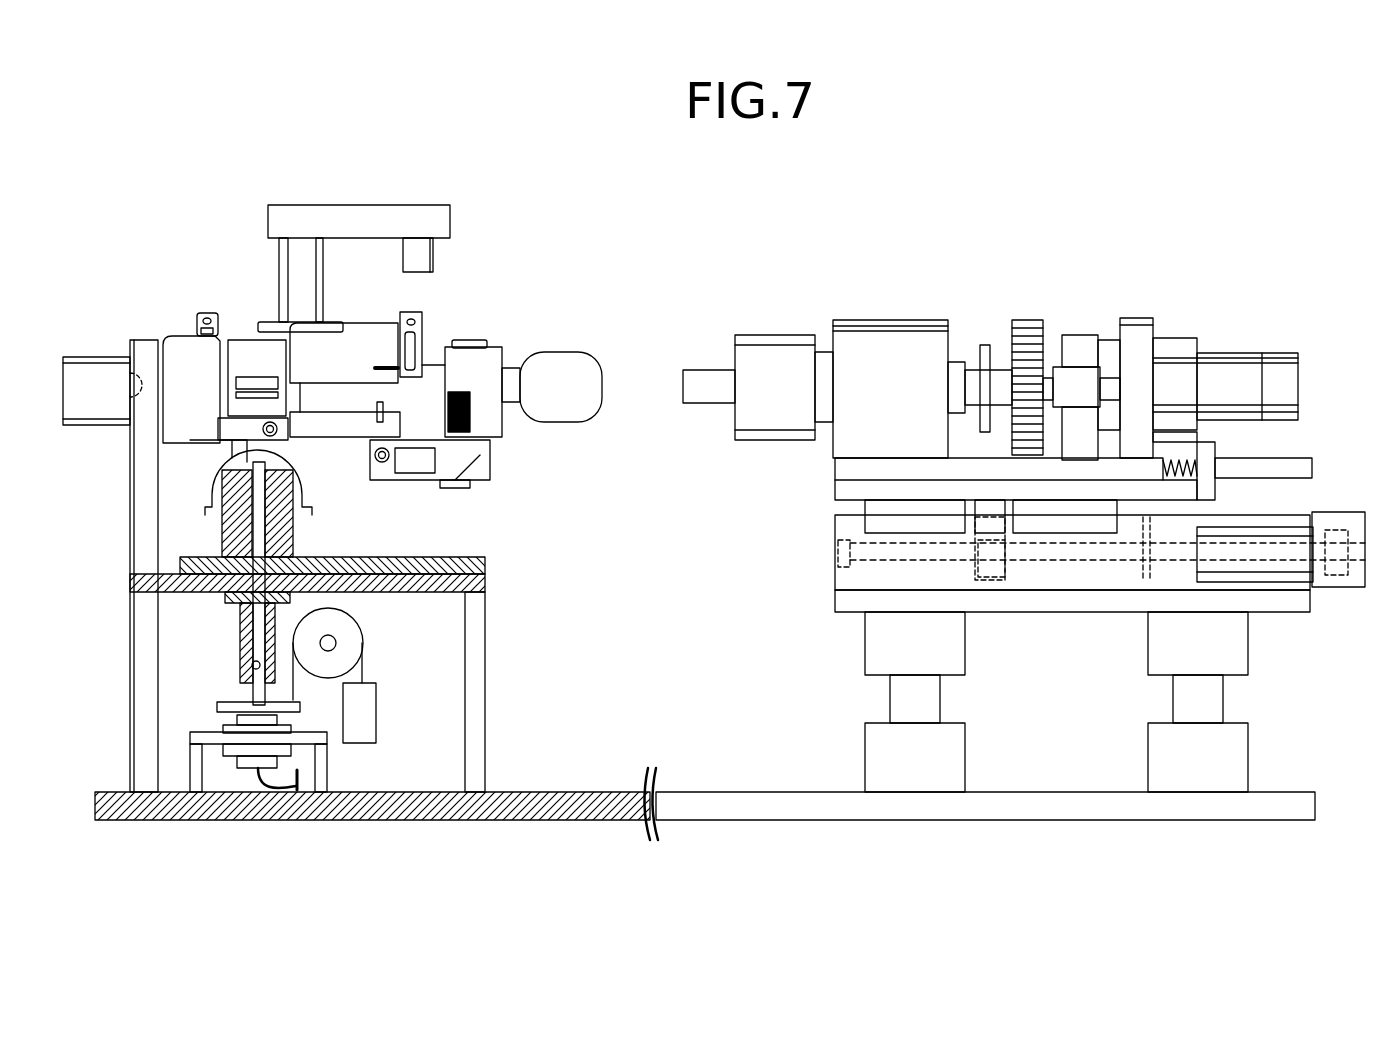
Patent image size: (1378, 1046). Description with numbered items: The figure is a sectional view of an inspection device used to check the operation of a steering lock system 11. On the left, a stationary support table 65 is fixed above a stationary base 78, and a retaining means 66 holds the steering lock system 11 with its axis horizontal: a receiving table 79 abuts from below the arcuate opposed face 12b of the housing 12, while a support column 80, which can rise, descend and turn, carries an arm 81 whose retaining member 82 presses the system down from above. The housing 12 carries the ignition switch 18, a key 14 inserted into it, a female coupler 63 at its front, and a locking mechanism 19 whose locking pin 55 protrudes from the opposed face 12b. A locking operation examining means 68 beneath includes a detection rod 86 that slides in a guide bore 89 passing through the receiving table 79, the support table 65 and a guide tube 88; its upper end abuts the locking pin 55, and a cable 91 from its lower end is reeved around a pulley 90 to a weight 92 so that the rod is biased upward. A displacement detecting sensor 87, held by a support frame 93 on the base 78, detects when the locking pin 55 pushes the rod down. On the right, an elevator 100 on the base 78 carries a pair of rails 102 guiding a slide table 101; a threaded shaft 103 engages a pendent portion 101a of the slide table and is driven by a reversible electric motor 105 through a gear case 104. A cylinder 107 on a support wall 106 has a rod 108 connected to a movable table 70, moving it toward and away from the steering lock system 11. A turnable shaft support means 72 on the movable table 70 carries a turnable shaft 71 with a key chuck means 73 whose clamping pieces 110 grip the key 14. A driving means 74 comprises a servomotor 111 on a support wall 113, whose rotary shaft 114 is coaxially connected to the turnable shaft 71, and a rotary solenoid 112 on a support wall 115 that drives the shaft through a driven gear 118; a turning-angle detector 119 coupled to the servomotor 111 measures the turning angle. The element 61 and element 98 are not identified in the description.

The steering lock system 11 is at (427, 345).
The housing 12 is at (357, 380).
The arcuate opposed face 12b is at (220, 522).
The key 14 is at (558, 368).
The ignition switch 18 is at (177, 332).
The locking mechanism 19 is at (268, 487).
The locking pin 55 is at (232, 450).
The drive unit 61 is at (178, 425).
The female coupler 63 is at (477, 415).
The support table 65 is at (483, 582).
The retaining means 66 is at (301, 205).
The locking operation examining means 68 is at (193, 718).
The movable table 70 is at (867, 470).
The turnable shaft 71 is at (972, 378).
The turnable shaft support means 72 is at (893, 335).
The key chuck means 73 is at (728, 340).
The driving means 74 is at (1195, 337).
The stationary base 78 is at (618, 810).
The receiving table 79 is at (325, 565).
The support column 80 is at (297, 293).
The arm 81 is at (371, 217).
The retaining member 82 is at (433, 258).
The detection rod 86 is at (260, 537).
The displacement detecting sensor 87 is at (230, 748).
The guide tube 88 is at (240, 638).
The guide bore 89 is at (252, 665).
The pulley 90 is at (347, 657).
The cable 91 is at (360, 673).
The weight 92 is at (373, 728).
The support frame 93 is at (193, 755).
The block 98 is at (98, 350).
The elevator 100 is at (1058, 613).
The slide table 101 is at (843, 492).
The pendent portion 101a is at (992, 583).
The rails 102 is at (840, 578).
The threaded shaft 103 is at (1068, 562).
The gear case 104 is at (1335, 522).
The electric motor 105 is at (1277, 570).
The support wall 106 is at (1212, 445).
The cylinder 107 is at (1290, 463).
The rod 108 is at (1180, 457).
The clamping pieces 110 is at (712, 393).
The servomotor 111 is at (1175, 372).
The rotary solenoid 112 is at (1108, 350).
The support wall 113 is at (1138, 330).
The rotary shaft 114 is at (1113, 390).
The support wall 115 is at (1082, 366).
The driven gear 118 is at (1020, 322).
The turning-angle detector 119 is at (1288, 377).